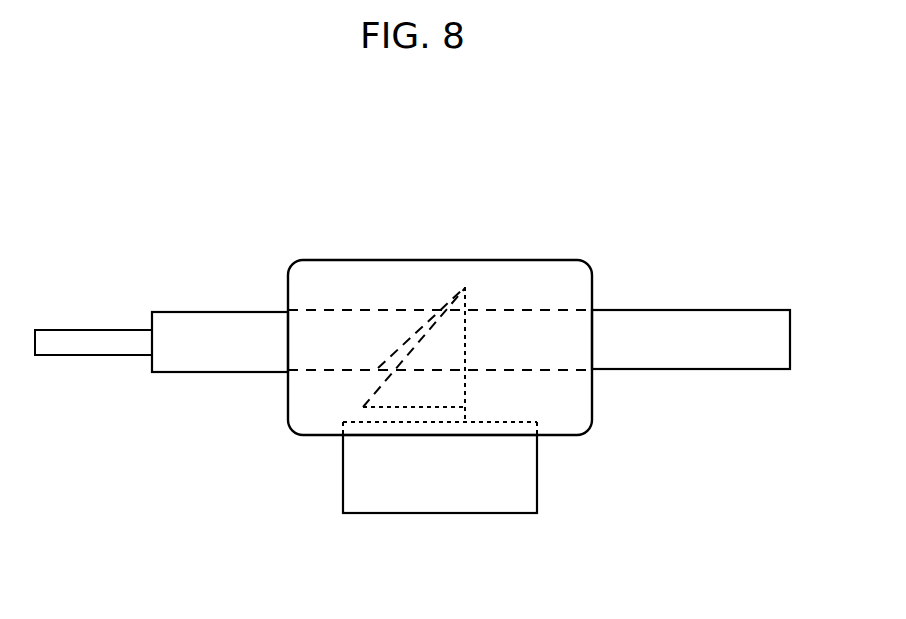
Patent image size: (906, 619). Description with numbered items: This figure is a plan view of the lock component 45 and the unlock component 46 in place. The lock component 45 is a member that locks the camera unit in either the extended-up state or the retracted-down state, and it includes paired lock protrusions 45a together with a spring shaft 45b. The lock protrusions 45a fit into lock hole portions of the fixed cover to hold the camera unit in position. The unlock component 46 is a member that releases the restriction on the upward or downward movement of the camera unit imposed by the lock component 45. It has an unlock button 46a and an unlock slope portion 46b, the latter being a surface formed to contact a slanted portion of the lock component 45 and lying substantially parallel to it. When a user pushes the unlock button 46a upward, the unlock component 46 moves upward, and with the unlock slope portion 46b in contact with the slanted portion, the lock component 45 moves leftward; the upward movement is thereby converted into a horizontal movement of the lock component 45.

The lock component 45 is at (247, 372).
The lock protrusions 45a is at (418, 334).
The spring shaft 45b is at (138, 330).
The unlock component 46 is at (535, 260).
The unlock button 46a is at (415, 505).
The unlock slope portion 46b is at (420, 335).